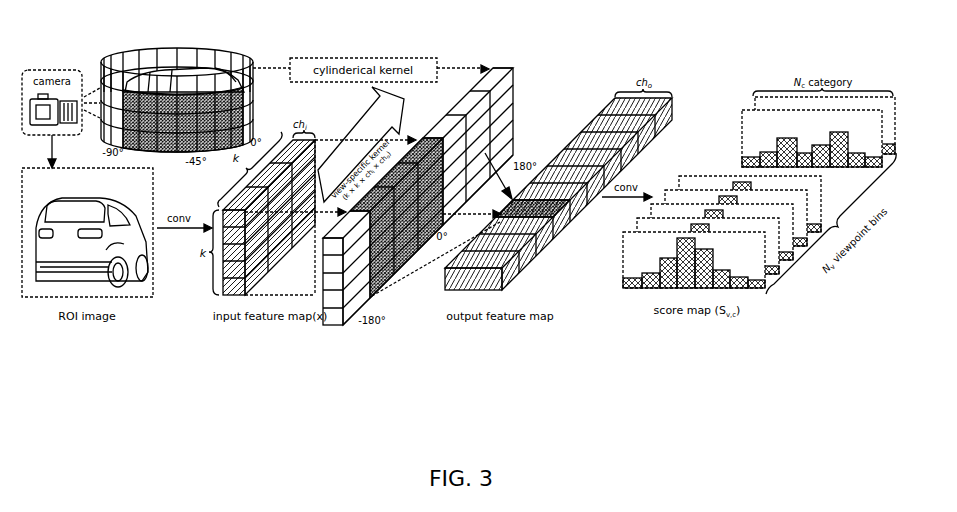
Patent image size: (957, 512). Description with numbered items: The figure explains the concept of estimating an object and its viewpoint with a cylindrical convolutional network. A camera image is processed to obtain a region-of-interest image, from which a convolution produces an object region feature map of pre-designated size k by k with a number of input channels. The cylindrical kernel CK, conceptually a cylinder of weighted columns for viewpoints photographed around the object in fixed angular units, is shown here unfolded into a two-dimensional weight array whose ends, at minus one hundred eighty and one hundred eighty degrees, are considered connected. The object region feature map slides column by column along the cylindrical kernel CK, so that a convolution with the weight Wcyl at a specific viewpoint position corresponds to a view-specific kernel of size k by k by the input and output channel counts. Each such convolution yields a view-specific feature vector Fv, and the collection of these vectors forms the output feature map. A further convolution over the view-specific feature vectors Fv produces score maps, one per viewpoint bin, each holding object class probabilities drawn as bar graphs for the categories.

The cylindrical kernel CK is at (196, 49).
The weight Wcyl is at (390, 278).
The view-specific feature vector Fv is at (532, 261).